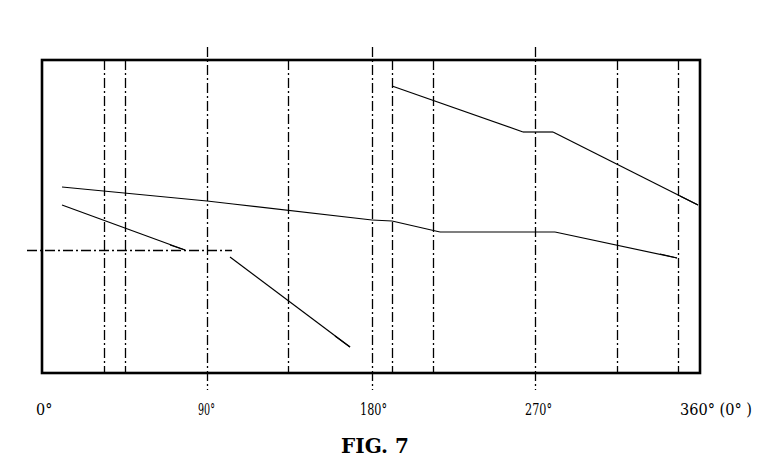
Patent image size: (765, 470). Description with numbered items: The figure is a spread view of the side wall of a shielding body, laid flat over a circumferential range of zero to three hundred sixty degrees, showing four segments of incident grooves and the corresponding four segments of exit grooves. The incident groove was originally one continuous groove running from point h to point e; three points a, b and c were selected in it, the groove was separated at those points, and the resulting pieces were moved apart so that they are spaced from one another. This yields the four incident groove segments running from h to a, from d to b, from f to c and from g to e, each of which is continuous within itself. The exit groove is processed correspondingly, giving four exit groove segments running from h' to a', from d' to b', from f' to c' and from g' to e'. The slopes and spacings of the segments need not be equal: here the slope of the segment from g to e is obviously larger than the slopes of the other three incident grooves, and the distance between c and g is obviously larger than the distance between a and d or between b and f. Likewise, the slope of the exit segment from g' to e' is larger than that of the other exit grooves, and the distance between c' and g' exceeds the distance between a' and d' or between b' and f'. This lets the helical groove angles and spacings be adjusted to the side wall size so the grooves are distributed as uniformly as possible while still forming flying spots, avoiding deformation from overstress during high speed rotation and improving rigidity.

The start point of incident groove segment ha h is at (126, 184).
The end point of incident groove segment ha a is at (220, 193).
The start point of incident groove segment db d is at (300, 201).
The end point of incident groove segment db b is at (375, 211).
The start point of exit groove segment f'c' f' is at (416, 217).
The end point of incident groove segment fc c is at (497, 240).
The start point of incident groove segment ge g is at (616, 236).
The end point of incident groove segment ge e is at (668, 265).
The start point of exit groove segment h'a' h' is at (450, 109).
The end point of exit groove segment h' a' is at (536, 122).
The start point of exit groove segment d'b' d' is at (625, 159).
The end point of exit groove segment d' b' is at (689, 192).
The start point of incident groove segment fc f is at (114, 227).
The end point of exit groove segment f' c' is at (185, 249).
The start point of exit groove segment g'e' g' is at (290, 294).
The end point of exit groove segment g' e' is at (352, 337).